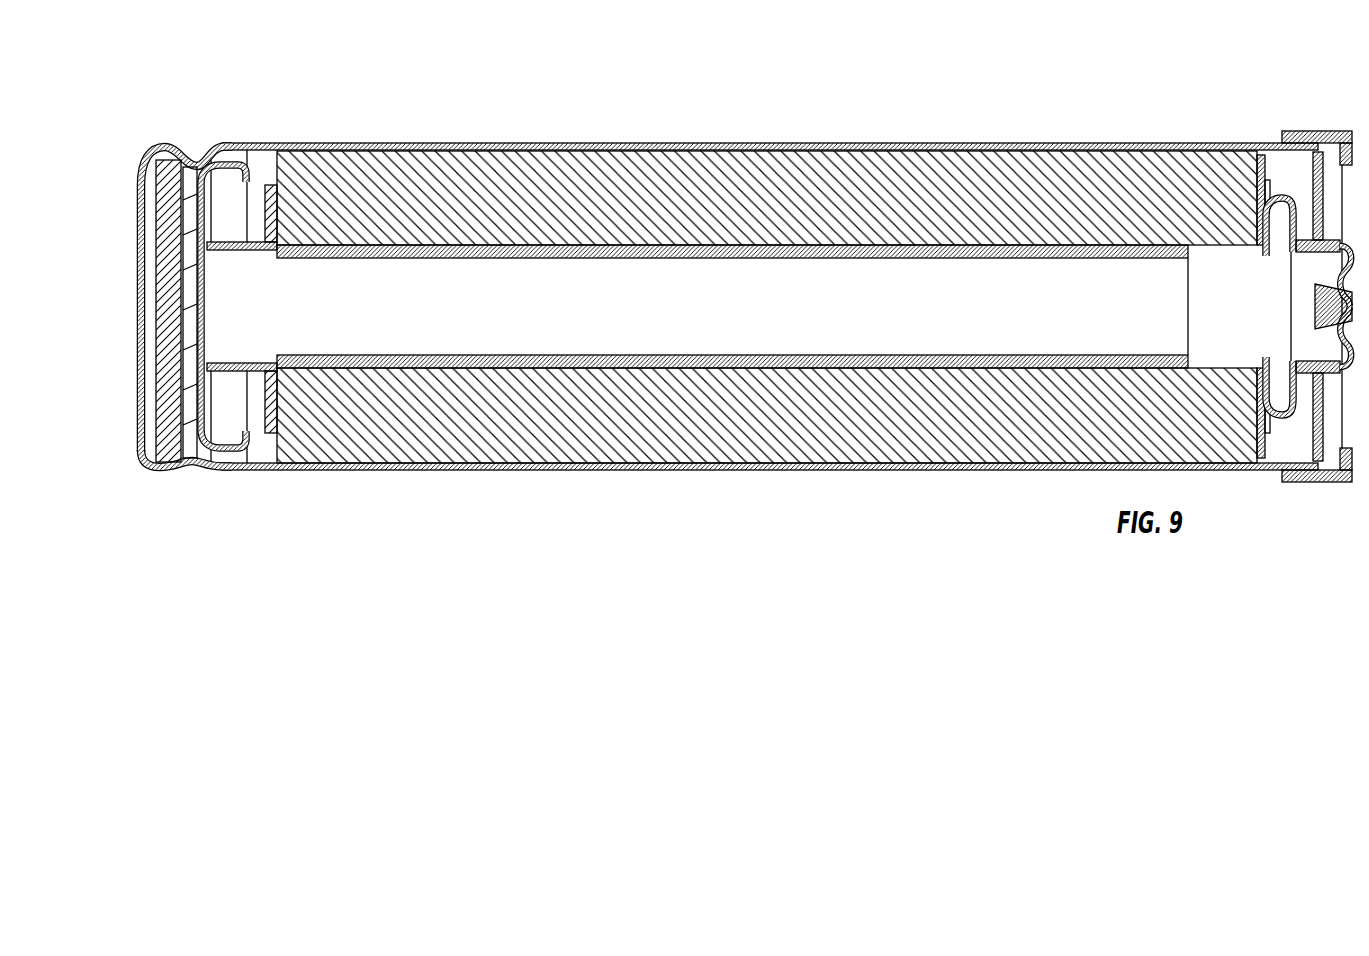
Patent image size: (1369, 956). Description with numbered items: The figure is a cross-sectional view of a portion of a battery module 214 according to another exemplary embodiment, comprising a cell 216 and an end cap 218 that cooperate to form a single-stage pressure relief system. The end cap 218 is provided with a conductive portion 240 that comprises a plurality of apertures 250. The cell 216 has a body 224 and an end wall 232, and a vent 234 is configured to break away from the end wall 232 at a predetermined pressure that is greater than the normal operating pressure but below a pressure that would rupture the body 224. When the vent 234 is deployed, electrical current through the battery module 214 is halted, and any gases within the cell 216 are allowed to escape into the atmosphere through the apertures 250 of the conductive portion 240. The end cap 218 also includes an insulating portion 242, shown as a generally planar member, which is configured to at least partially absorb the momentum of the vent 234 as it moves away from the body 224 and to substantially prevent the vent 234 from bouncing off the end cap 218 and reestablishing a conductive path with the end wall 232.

The battery module 214 is at (972, 520).
The cell 216 is at (741, 528).
The end cap 218 is at (201, 355).
The body 224 is at (509, 470).
The end wall 232 is at (200, 458).
The vent 234 is at (207, 405).
The conductive portion 240 is at (155, 465).
The insulating portion 242 is at (160, 392).
The apertures 250 is at (187, 162).